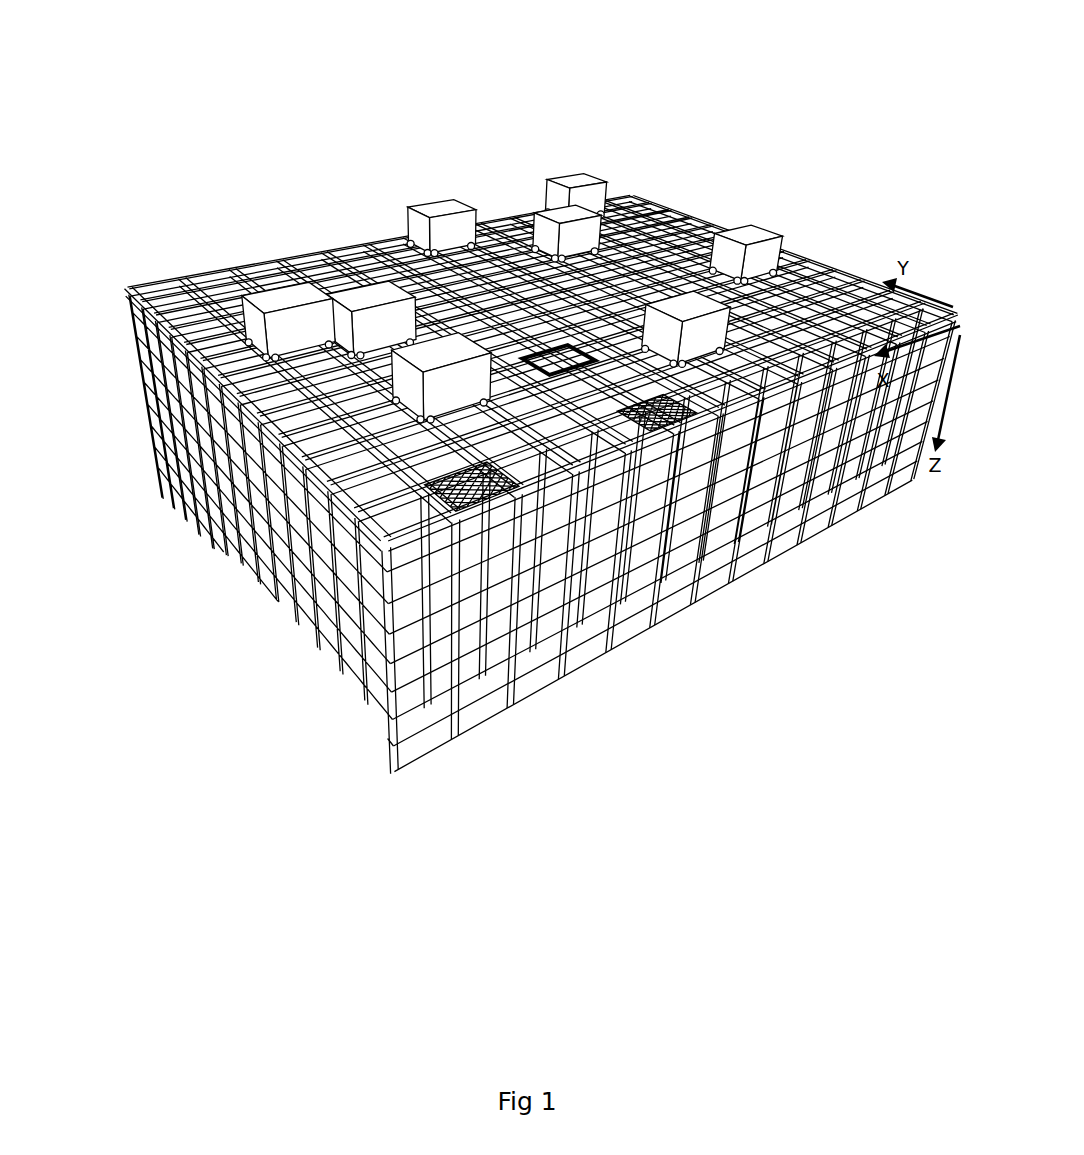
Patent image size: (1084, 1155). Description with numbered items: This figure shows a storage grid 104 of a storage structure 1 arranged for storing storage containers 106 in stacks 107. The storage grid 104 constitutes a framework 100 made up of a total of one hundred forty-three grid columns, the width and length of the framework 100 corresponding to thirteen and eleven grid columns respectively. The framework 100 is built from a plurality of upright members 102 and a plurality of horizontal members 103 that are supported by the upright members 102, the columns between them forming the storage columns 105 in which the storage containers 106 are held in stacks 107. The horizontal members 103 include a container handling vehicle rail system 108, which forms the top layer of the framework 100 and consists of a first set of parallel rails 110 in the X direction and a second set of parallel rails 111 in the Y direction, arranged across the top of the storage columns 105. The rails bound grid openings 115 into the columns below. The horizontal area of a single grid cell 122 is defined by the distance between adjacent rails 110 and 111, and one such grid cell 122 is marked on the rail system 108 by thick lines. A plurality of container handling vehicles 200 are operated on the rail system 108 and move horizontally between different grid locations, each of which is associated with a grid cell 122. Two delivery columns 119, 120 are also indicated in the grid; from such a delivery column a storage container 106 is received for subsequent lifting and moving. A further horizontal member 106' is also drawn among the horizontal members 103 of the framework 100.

The storage structure 1 is at (499, 435).
The framework structure 100 is at (499, 441).
The upright members 102 is at (387, 652).
The horizontal members 103 is at (742, 500).
The storage grid 104 is at (115, 312).
The storage column 105 is at (300, 553).
The storage container 106 is at (666, 611).
The horizontal member 106' is at (668, 557).
The stack 107 is at (888, 498).
The rail system 108 is at (505, 327).
The first set of parallel rails 110 is at (820, 305).
The second set of parallel rails 111 is at (383, 238).
The grid opening 115 is at (773, 290).
The delivery column 119 is at (477, 498).
The delivery column 120 is at (652, 418).
The grid cell 122 is at (530, 350).
The container handling vehicle 200 is at (592, 190).